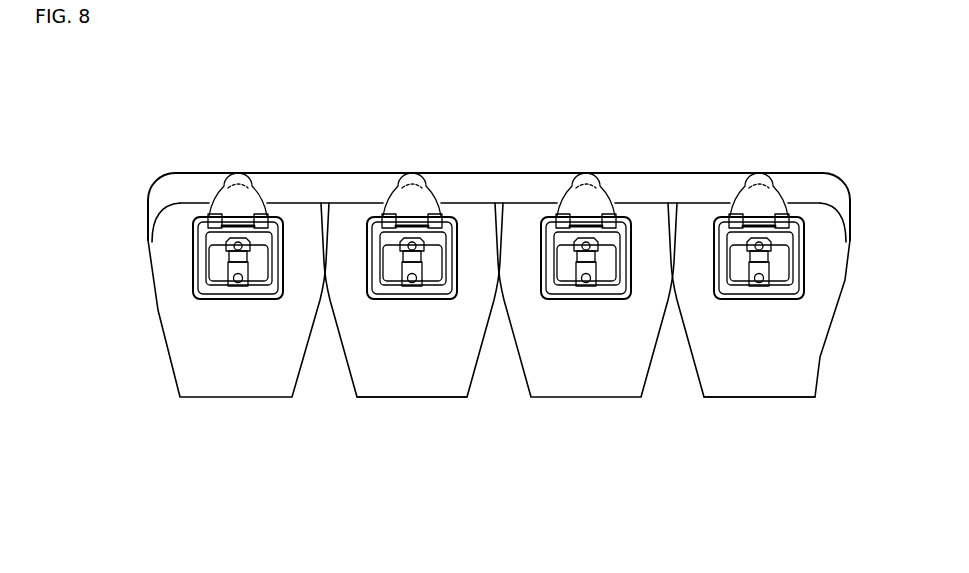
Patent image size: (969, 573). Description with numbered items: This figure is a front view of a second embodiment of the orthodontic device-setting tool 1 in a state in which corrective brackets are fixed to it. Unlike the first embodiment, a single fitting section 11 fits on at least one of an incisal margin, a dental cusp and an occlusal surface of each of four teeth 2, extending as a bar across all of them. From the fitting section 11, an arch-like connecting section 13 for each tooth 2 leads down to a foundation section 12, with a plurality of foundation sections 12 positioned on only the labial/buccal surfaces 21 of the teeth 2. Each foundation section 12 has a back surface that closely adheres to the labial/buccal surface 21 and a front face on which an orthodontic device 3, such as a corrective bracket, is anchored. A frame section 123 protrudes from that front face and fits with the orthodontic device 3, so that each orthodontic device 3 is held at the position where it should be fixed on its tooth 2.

The orthodontic device-setting tool 1 is at (145, 167).
The fitting section 11 is at (198, 182).
The foundation section 12 is at (192, 257).
The connecting section 13 is at (240, 190).
The frame section 123 is at (277, 293).
The tooth 2 is at (364, 417).
The labial/buccal surface 21 is at (352, 295).
The orthodontic device 3 is at (434, 292).